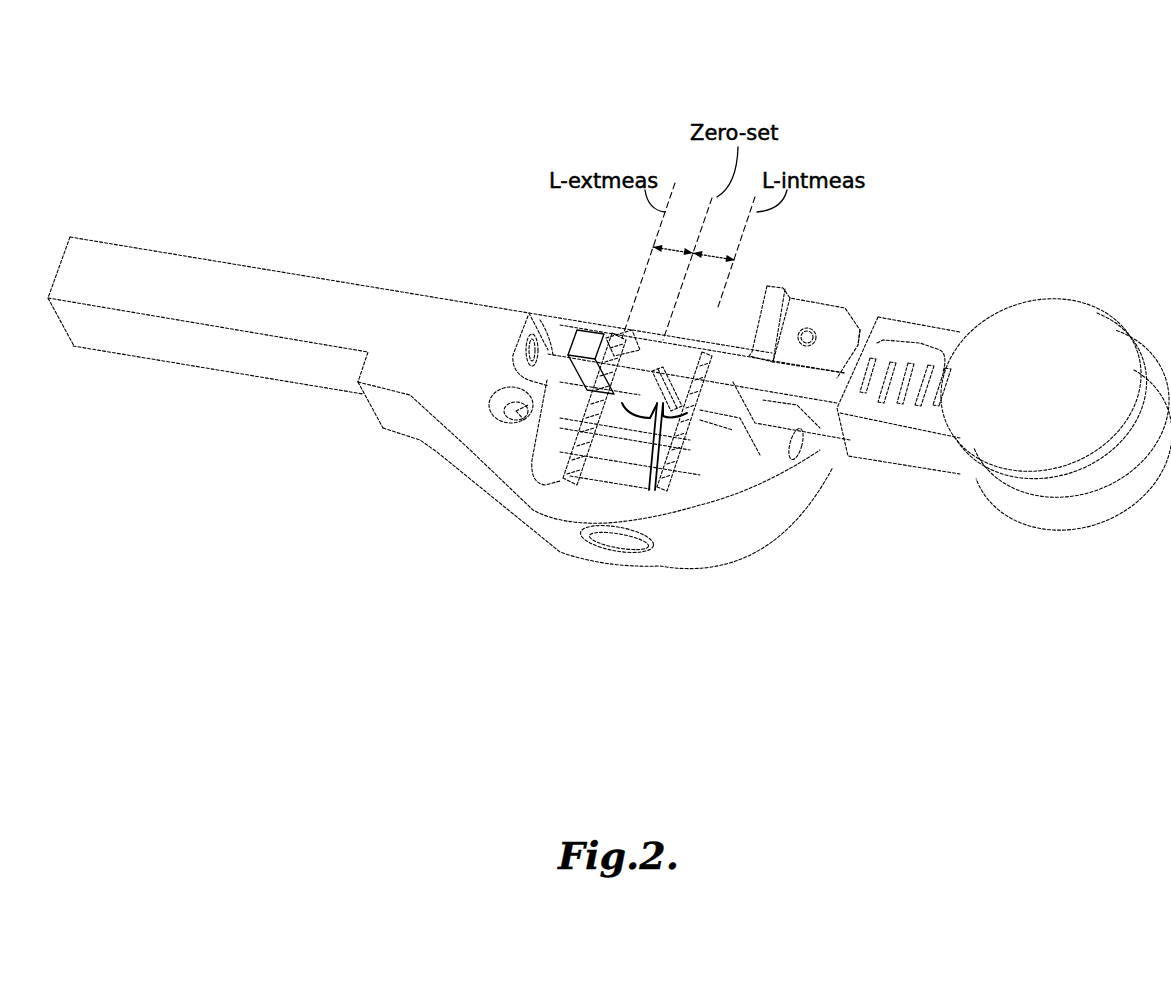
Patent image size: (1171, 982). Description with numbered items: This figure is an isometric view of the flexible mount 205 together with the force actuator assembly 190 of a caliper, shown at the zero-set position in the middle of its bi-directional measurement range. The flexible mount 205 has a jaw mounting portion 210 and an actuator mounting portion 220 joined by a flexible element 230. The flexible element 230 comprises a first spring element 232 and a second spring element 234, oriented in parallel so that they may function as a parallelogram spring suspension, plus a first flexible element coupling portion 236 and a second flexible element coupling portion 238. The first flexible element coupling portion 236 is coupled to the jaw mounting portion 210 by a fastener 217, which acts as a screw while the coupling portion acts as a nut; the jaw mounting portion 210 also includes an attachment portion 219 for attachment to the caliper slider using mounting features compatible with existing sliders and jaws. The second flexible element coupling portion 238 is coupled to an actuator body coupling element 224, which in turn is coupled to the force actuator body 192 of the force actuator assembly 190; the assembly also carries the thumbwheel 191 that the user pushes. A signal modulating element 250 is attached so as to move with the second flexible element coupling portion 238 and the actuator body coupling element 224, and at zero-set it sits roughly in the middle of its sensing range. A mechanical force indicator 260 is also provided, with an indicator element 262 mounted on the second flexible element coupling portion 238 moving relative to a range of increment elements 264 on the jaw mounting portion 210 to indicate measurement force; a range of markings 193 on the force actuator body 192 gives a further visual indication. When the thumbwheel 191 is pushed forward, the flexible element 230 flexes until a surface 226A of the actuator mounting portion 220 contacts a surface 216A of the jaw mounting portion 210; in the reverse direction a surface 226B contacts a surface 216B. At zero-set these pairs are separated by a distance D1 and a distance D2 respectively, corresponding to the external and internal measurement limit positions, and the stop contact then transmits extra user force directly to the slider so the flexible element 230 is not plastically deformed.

The flexible mount 205 is at (587, 140).
The jaw mounting portion 210 is at (565, 551).
The fastener 217 is at (617, 552).
The attachment portion 219 is at (815, 313).
The actuator mounting portion 220 is at (731, 350).
The actuator body coupling element 224 is at (822, 413).
The surface of the jaw mounting portion 216A is at (848, 330).
The surface of the jaw mounting portion 216B is at (687, 452).
The surface of the actuator mounting portion 226A is at (875, 327).
The surface of the actuator mounting portion 226B is at (697, 463).
The markings 193 is at (912, 337).
The force actuator assembly 190 is at (1162, 600).
The thumbwheel 191 is at (1110, 517).
The force actuator body 192 is at (910, 450).
The flexible element 230 is at (740, 427).
The second spring element 234 is at (698, 448).
The first spring element 232 is at (610, 387).
The first flexible element coupling portion 236 is at (613, 473).
The second flexible element coupling portion 238 is at (642, 345).
The signal modulating element 250 is at (590, 322).
The force indicator 260 is at (649, 490).
The indicator element 262 is at (667, 383).
The increment elements 264 is at (655, 490).
The distance D1 is at (684, 266).
The distance D2 is at (727, 268).